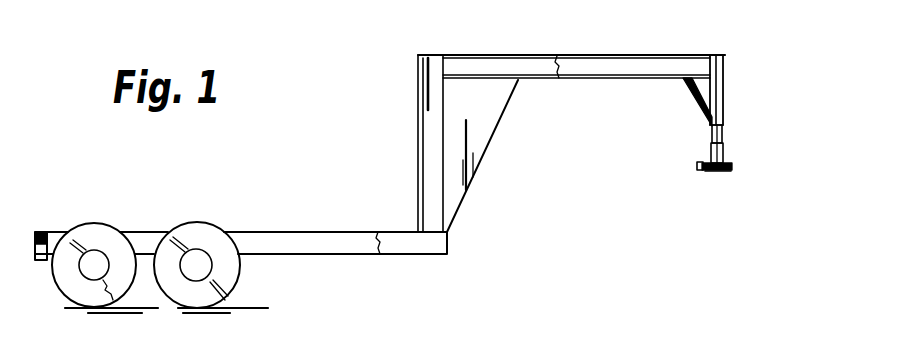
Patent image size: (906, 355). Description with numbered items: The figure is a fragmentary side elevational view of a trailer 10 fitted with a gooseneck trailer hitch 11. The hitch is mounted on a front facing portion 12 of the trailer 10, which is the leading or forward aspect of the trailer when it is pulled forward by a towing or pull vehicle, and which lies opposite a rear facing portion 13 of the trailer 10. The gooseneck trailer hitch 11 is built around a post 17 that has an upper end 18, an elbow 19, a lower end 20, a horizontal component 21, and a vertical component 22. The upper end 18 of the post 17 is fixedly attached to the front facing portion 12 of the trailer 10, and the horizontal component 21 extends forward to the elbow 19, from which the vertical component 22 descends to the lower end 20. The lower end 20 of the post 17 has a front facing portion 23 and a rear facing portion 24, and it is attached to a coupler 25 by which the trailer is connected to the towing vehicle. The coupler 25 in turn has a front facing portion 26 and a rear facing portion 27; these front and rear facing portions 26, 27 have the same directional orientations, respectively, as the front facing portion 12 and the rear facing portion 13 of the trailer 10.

The trailer 10 is at (334, 222).
The gooseneck trailer hitch 11 is at (675, 50).
The front facing portion 12 is at (444, 115).
The rear facing portion 13 is at (47, 232).
The post 17 is at (718, 56).
The upper end 18 is at (445, 62).
The elbow 19 is at (725, 67).
The lower end 20 is at (708, 155).
The horizontal component 21 is at (592, 65).
The vertical component 22 is at (697, 96).
The front facing portion 23 is at (725, 135).
The rear facing portion 24 is at (710, 158).
The coupler 25 is at (722, 172).
The front facing portion 26 is at (732, 169).
The rear facing portion 27 is at (702, 170).